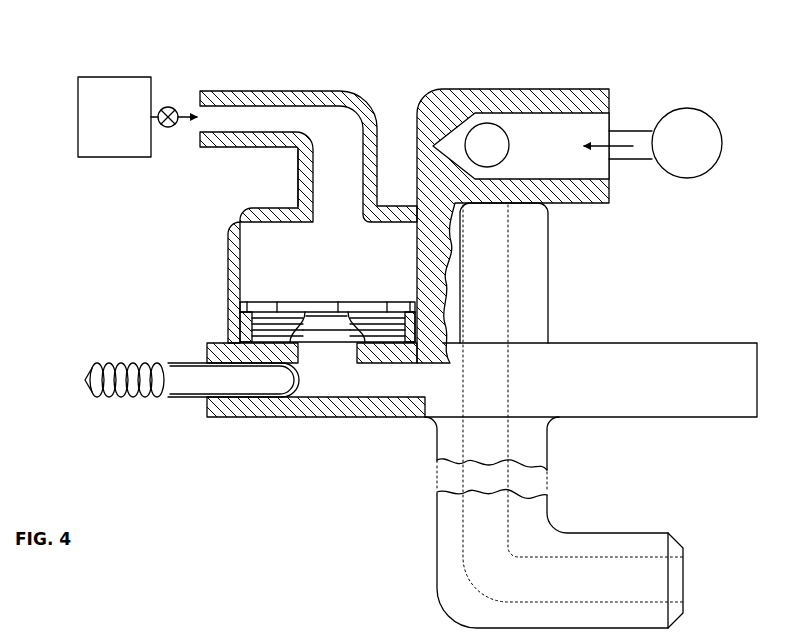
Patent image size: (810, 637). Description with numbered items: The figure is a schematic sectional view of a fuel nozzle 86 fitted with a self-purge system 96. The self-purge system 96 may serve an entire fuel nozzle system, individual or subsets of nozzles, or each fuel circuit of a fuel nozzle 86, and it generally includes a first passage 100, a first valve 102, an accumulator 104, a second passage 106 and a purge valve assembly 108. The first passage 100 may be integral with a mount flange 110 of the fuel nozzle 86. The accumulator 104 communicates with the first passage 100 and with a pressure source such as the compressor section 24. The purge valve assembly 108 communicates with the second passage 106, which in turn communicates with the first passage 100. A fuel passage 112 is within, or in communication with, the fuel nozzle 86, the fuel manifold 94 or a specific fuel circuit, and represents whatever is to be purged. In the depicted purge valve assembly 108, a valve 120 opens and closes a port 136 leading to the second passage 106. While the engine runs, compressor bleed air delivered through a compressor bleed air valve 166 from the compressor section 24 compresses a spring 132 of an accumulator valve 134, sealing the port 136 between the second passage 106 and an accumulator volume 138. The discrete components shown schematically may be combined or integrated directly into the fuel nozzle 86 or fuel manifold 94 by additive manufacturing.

The compressor section 24 is at (122, 90).
The compressor bleed air valve 166 is at (176, 108).
The self-purge system 96 is at (353, 90).
The fuel nozzle 86 is at (546, 86).
The fuel manifold 94 is at (724, 122).
The accumulator 104 is at (204, 283).
The accumulator volume 138 is at (291, 243).
The purge valve assembly 108 is at (276, 299).
The spring 132 is at (228, 333).
The accumulator valve 134 is at (348, 322).
The valve 120 is at (318, 352).
The first valve 102 is at (192, 386).
The fuel passage 112 is at (498, 296).
The mount flange 110 is at (628, 405).
The first passage 100 is at (442, 366).
The port 136 is at (368, 364).
The second passage 106 is at (358, 358).